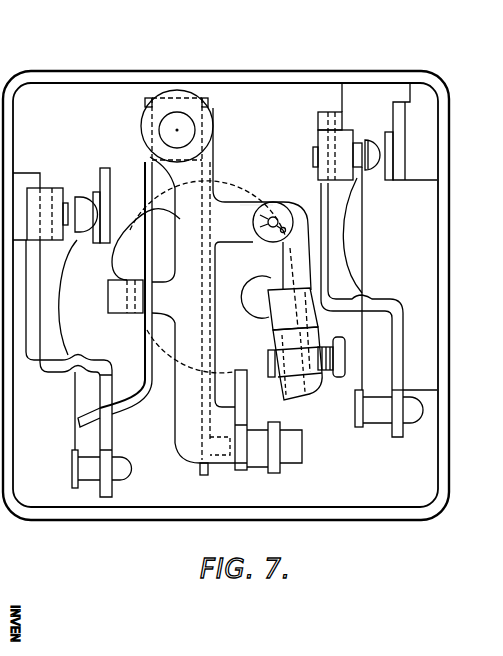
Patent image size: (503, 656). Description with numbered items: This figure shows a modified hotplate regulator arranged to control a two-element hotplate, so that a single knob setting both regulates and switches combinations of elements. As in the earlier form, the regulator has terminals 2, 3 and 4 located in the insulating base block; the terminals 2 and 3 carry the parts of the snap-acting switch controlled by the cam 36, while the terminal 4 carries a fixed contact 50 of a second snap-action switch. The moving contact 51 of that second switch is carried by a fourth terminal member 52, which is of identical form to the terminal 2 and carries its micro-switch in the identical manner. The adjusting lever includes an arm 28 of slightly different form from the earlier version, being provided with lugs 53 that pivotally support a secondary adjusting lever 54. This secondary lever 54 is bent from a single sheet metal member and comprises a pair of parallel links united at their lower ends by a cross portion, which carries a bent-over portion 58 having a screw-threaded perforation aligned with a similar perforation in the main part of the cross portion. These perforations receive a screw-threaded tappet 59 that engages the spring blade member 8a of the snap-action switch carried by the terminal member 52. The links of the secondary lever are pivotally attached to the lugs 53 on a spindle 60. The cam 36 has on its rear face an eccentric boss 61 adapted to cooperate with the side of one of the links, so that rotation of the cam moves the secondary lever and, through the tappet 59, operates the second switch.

The arm 28 is at (190, 102).
The spindle 60 is at (273, 213).
The lugs 53 is at (240, 206).
The eccentric boss 61 is at (256, 276).
The secondary adjusting lever 54 is at (300, 290).
The bent-over portion 58 is at (300, 400).
The screw-threaded tappet 59 is at (344, 375).
The spring blade member 8a is at (358, 290).
The fourth terminal member 52 is at (402, 360).
The terminal 4 is at (398, 120).
The fixed contact 50 is at (397, 143).
The moving contact 51 is at (372, 170).
The terminal 3 is at (104, 168).
The terminal 2 is at (113, 444).
The cam 36 is at (167, 353).